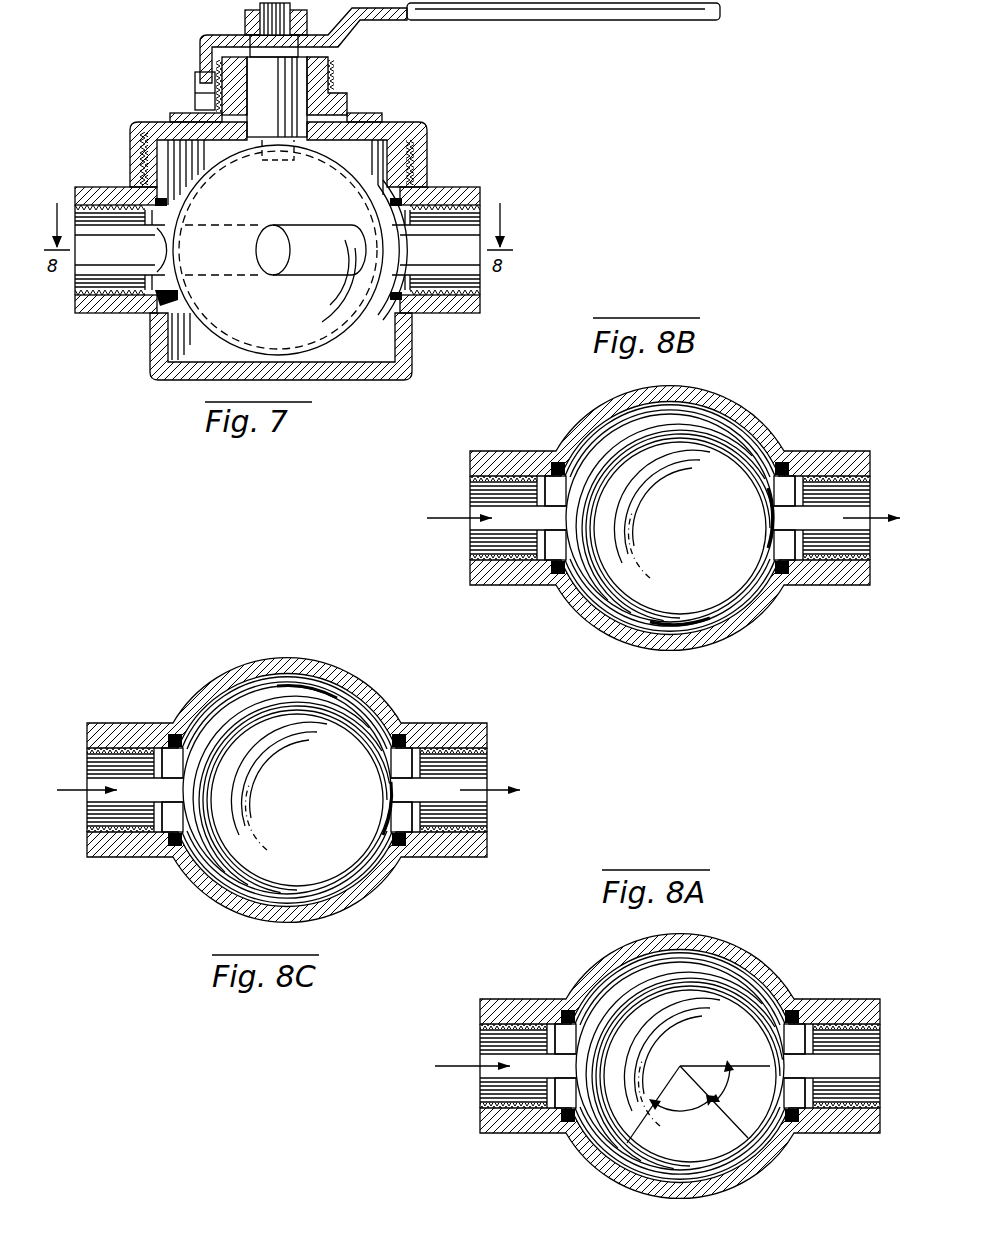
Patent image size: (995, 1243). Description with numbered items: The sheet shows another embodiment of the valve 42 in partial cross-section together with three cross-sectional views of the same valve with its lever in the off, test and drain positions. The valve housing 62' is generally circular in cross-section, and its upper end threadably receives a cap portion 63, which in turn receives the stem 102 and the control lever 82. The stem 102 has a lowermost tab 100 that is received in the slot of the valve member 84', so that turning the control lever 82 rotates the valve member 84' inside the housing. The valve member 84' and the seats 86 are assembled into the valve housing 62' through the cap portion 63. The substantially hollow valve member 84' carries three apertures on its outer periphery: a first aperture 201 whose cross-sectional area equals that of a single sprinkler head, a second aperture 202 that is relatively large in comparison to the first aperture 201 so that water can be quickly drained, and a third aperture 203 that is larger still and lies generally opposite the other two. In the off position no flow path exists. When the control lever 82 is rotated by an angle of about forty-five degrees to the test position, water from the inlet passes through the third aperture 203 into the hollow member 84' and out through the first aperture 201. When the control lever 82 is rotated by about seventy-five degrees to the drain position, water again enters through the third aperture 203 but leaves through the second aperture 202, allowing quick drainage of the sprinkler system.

In FIG. 7, the valve 42 is at (426, 128).
In FIG. 7, the valve housing 62' is at (311, 359).
In FIG. 7, the cap portion 63 is at (405, 122).
In FIG. 7, the control lever 82 is at (566, 22).
In FIG. 7, the valve member 84' is at (315, 247).
In FIG. 8B, the valve member 84' is at (681, 497).
In FIG. 8C, the valve member 84' is at (287, 748).
In FIG. 8A, the valve member 84' is at (700, 1045).
In FIG. 7, the seats 86 is at (148, 150).
In FIG. 7, the lowermost tab 100 is at (352, 108).
In FIG. 7, the stem 102 is at (312, 80).
In FIG. 7, the first aperture 201 is at (475, 187).
In FIG. 8B, the first aperture 201 is at (800, 564).
In FIG. 8C, the first aperture 201 is at (332, 657).
In FIG. 8A, the first aperture 201 is at (740, 1137).
In FIG. 7, the second aperture 202 is at (358, 255).
In FIG. 8B, the second aperture 202 is at (680, 657).
In FIG. 8C, the second aperture 202 is at (421, 840).
In FIG. 8A, the second aperture 202 is at (653, 1146).
In FIG. 7, the third aperture 203 is at (163, 297).
In FIG. 8B, the third aperture 203 is at (663, 505).
In FIG. 8C, the third aperture 203 is at (283, 802).
In FIG. 8A, the third aperture 203 is at (680, 1050).